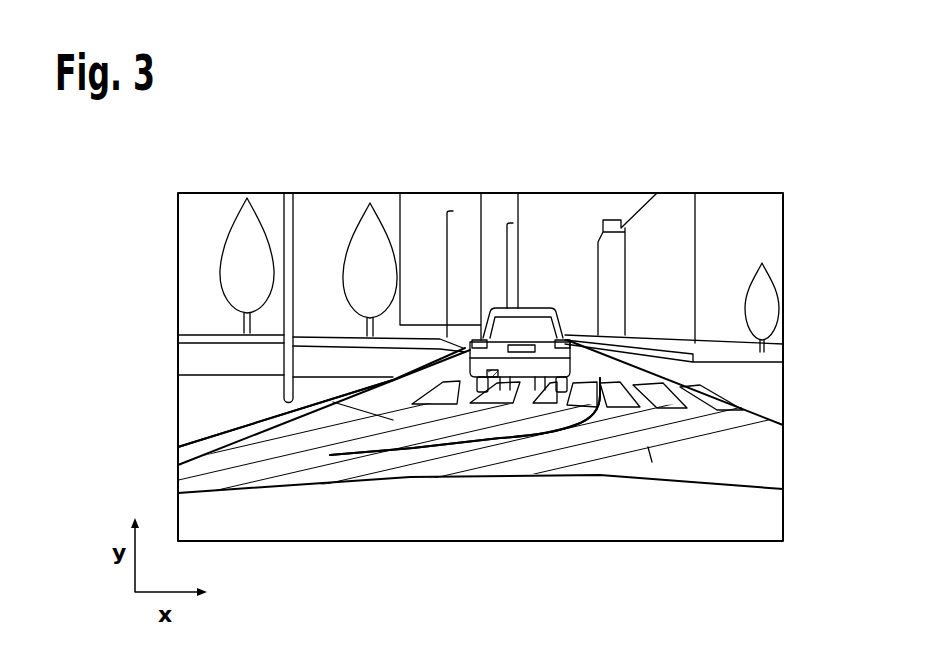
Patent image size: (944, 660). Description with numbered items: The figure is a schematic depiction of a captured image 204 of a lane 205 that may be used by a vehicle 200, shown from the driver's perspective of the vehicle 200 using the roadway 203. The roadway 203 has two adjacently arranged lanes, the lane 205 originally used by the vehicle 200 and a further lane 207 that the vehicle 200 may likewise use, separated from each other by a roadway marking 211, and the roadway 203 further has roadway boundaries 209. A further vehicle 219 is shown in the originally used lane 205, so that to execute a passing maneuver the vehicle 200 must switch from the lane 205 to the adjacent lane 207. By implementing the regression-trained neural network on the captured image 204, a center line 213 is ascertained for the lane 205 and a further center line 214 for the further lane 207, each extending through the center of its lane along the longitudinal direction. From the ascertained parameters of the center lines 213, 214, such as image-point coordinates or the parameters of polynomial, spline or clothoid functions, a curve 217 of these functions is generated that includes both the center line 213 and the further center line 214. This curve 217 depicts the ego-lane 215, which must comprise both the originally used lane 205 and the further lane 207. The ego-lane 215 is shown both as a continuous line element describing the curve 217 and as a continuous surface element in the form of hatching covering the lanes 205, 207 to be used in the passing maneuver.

The vehicle 200 is at (253, 527).
The roadway 203 is at (727, 462).
The captured image 204 is at (753, 168).
The lane 205 is at (365, 455).
The further lane 207 is at (690, 468).
The roadway boundaries 209 is at (210, 450).
The roadway marking 211 is at (533, 440).
The center line 213 is at (462, 465).
The further center line 214 is at (648, 442).
The ego-lane 215 is at (333, 402).
The curve 217 is at (500, 440).
The further vehicle 219 is at (542, 300).